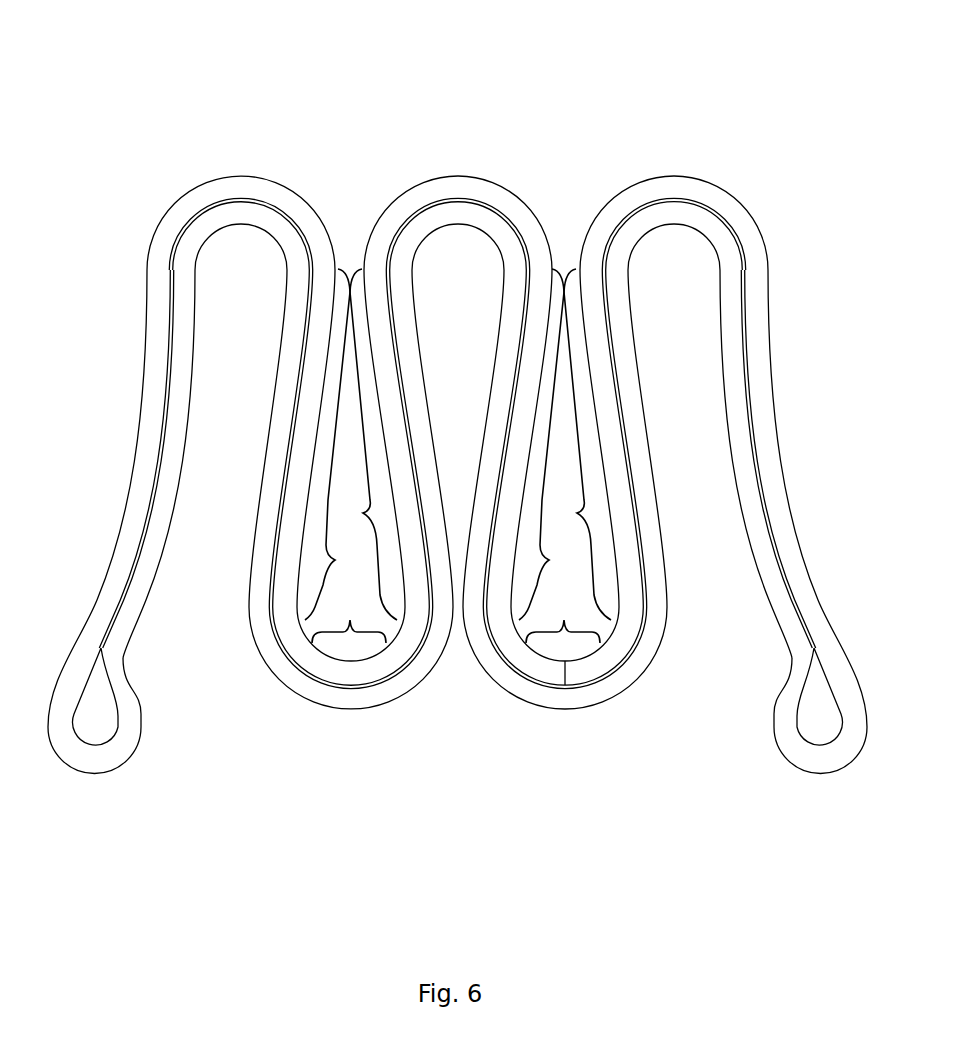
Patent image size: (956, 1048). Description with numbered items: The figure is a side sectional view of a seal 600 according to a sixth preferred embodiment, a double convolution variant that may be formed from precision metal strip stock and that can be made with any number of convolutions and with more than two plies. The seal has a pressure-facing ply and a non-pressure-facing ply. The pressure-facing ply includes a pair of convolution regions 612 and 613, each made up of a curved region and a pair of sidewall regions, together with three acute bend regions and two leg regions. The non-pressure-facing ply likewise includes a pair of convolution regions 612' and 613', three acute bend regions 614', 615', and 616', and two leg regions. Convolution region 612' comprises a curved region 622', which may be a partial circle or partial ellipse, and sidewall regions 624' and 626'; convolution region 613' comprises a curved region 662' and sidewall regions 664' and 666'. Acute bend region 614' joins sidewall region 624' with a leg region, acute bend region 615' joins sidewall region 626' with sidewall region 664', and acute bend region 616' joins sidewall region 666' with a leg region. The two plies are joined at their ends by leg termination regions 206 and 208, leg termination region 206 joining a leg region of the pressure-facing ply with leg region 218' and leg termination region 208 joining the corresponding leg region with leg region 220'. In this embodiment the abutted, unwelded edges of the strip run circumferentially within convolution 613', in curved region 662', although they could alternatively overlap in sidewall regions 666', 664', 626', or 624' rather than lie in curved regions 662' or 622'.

The seal 600 is at (761, 89).
The convolution region 612 is at (356, 544).
The convolution region 613 is at (577, 544).
The convolution region 612' is at (352, 103).
The convolution region 613' is at (563, 103).
The acute bend region 614' is at (241, 180).
The acute bend region 615' is at (458, 180).
The acute bend region 616' is at (673, 180).
The leg region 218' is at (103, 491).
The leg region 220' is at (813, 491).
The leg termination region 206 is at (107, 757).
The leg termination region 208 is at (811, 762).
The curved region 622' is at (349, 620).
The sidewall region 624' is at (338, 444).
The sidewall region 626' is at (363, 444).
The curved region 662' is at (563, 620).
The sidewall region 664' is at (553, 444).
The sidewall region 666' is at (578, 444).